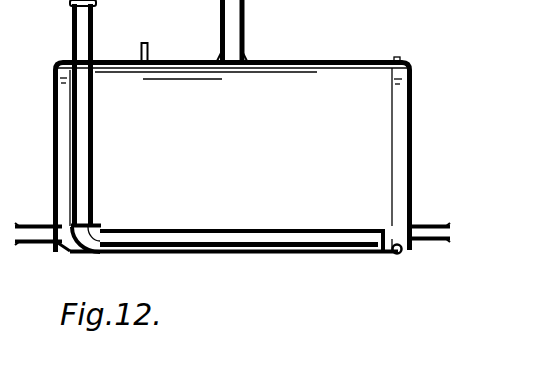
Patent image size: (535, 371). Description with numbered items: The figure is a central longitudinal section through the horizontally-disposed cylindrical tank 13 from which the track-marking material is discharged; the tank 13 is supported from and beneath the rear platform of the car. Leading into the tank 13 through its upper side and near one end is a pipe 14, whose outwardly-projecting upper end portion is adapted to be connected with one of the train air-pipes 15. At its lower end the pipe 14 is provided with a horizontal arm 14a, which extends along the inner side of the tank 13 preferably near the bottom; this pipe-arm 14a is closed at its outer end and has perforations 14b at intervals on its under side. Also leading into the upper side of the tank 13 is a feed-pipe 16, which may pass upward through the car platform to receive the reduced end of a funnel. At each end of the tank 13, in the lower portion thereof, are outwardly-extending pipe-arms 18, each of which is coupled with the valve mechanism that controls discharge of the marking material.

The tank 13 is at (338, 61).
The pipe 14 is at (93, 34).
The horizontal arm 14a is at (190, 229).
The perforations 14b is at (112, 240).
The train air-pipe 15 is at (70, 1).
The feed-pipe 16 is at (244, 23).
The pipe-arms 18 is at (21, 241).